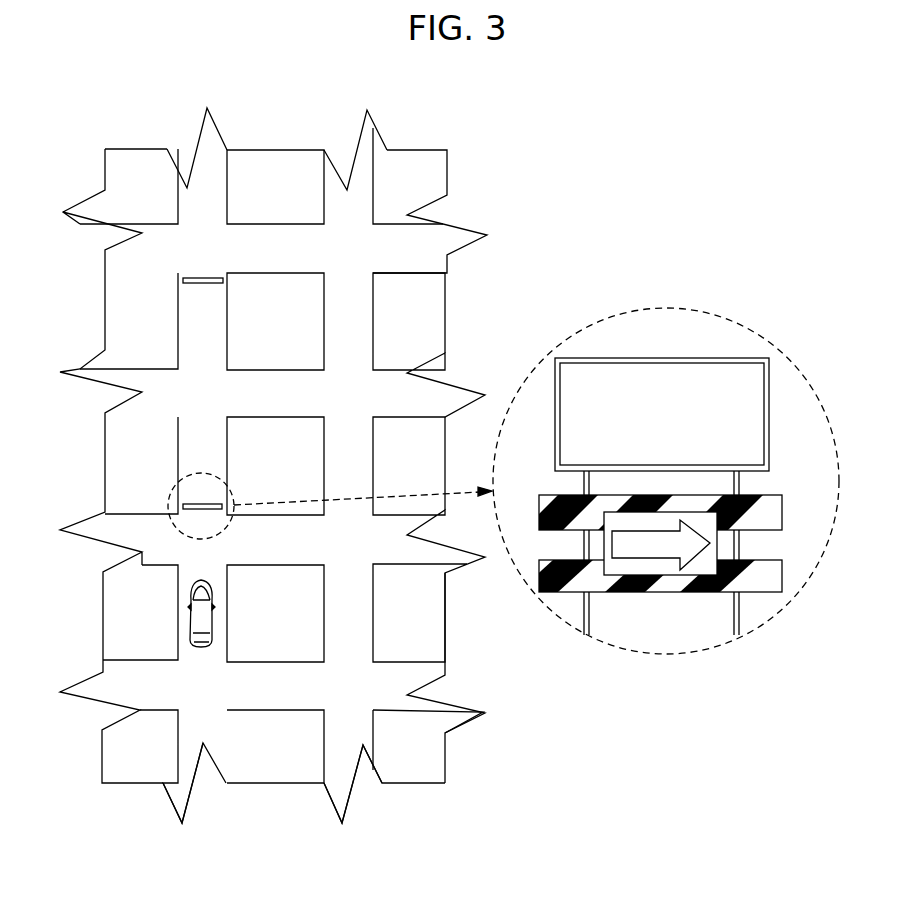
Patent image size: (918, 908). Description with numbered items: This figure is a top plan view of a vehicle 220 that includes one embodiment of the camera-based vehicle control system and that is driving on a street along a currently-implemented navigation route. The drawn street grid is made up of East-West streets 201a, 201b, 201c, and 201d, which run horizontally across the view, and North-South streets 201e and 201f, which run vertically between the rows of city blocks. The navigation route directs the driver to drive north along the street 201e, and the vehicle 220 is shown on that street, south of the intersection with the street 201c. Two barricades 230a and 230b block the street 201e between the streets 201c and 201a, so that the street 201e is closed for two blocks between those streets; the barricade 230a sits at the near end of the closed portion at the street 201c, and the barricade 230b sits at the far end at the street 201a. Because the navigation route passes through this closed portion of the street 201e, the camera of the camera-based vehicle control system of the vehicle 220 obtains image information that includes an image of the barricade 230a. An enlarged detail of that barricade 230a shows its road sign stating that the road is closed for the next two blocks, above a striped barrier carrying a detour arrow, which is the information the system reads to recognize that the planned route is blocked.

The East-West street 201a is at (150, 253).
The East-West street 201b is at (148, 403).
The East-West street 201c is at (147, 537).
The East-West street 201d is at (125, 683).
The North-South street 201e is at (197, 727).
The North-South street 201f is at (343, 737).
The vehicle 220 is at (204, 615).
The barricade 230a is at (203, 503).
The barricade 230b is at (204, 278).